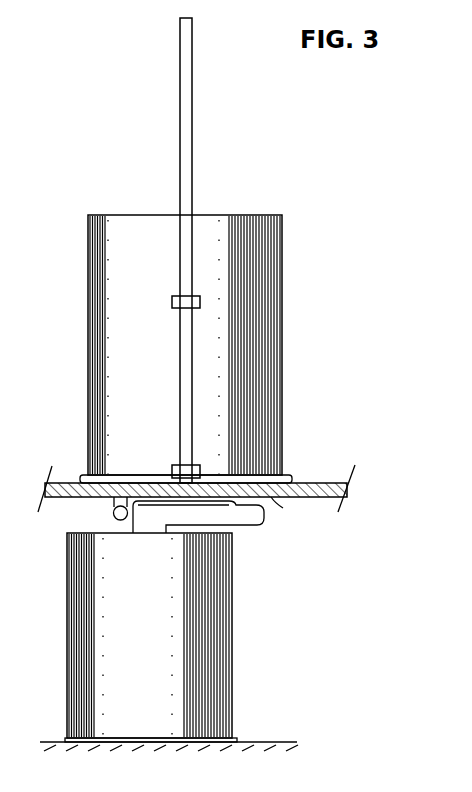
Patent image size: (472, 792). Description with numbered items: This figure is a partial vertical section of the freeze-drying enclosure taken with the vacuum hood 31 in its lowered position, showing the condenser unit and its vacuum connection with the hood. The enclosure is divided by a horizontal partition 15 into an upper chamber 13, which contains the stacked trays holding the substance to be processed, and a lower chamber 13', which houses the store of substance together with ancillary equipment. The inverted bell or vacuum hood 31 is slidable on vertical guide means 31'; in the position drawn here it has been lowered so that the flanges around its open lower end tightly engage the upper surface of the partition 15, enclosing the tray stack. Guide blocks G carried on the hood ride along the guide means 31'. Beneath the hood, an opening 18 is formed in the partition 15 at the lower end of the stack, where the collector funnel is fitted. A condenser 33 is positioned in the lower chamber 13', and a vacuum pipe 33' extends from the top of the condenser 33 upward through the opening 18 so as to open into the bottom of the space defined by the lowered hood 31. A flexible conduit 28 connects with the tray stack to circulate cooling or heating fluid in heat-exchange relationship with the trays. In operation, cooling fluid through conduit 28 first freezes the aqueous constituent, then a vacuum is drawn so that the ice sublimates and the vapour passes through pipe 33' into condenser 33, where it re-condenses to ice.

The vertical guide means 31' is at (218, 250).
The vacuum hood 31 is at (216, 349).
The guide blocks G is at (195, 473).
The horizontal partition 15 is at (346, 484).
The upper chamber 13 is at (330, 444).
The lower chamber 13' is at (336, 545).
The flexible conduit 28 is at (112, 512).
The vacuum pipe 33' is at (208, 538).
The opening 18 is at (289, 511).
The condenser 33 is at (176, 637).